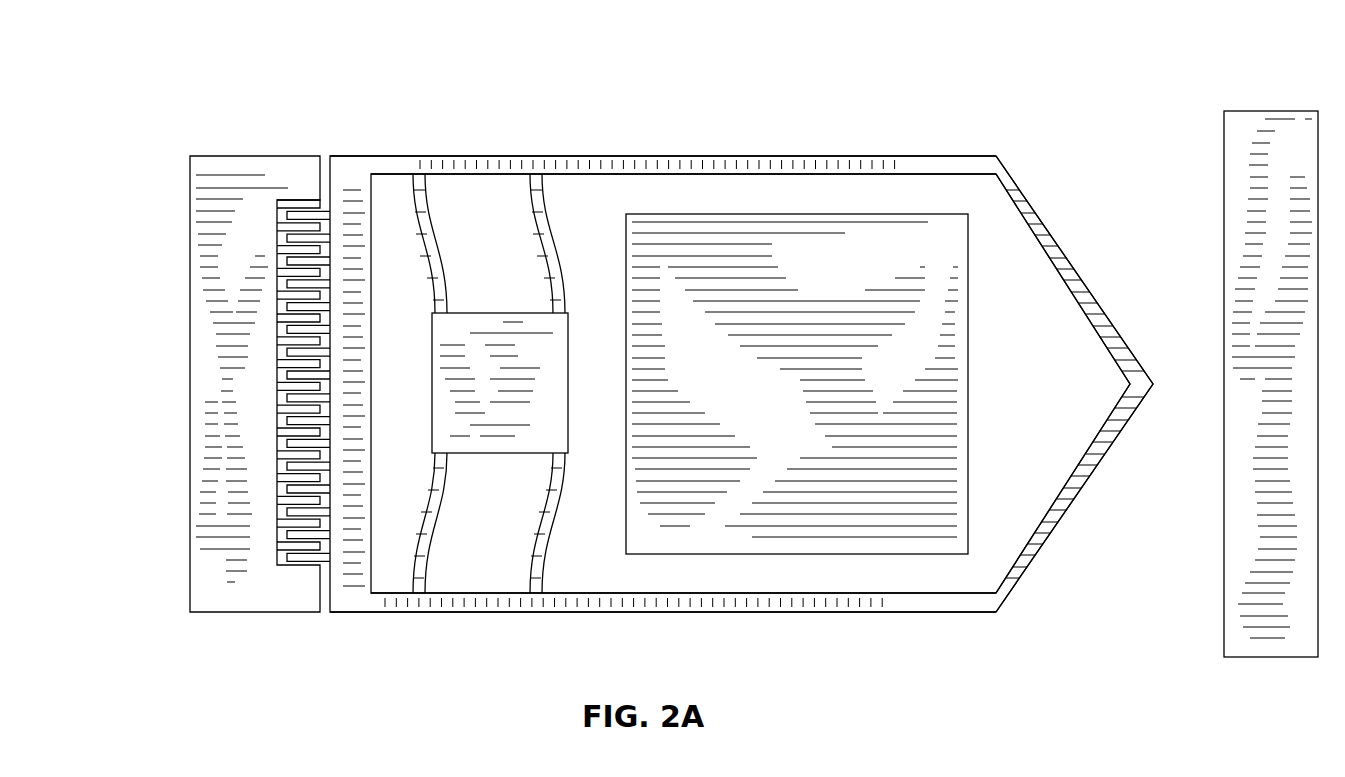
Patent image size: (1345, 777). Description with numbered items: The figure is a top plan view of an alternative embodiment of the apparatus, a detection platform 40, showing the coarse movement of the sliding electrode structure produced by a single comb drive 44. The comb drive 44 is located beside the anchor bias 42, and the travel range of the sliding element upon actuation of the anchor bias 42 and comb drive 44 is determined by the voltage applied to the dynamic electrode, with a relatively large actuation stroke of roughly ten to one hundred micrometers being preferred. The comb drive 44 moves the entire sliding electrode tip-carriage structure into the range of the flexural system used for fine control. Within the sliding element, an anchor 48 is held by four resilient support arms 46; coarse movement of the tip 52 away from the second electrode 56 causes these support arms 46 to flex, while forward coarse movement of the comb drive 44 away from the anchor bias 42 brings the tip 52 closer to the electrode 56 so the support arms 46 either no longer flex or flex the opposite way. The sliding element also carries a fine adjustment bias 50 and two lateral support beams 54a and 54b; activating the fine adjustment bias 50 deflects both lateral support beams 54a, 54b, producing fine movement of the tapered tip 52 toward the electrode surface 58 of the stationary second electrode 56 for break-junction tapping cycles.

The detection platform 40 is at (118, 54).
The anchor bias 42 is at (203, 570).
The comb drive 44 is at (322, 624).
The resilient support arms 46 is at (437, 254).
The anchor 48 is at (458, 345).
The fine adjustment bias 50 is at (953, 432).
The tip 52 is at (1161, 366).
The lateral support beam 54a is at (768, 163).
The lateral support beam 54b is at (780, 605).
The second electrode 56 is at (1263, 648).
The electrode surface 58 is at (1206, 423).